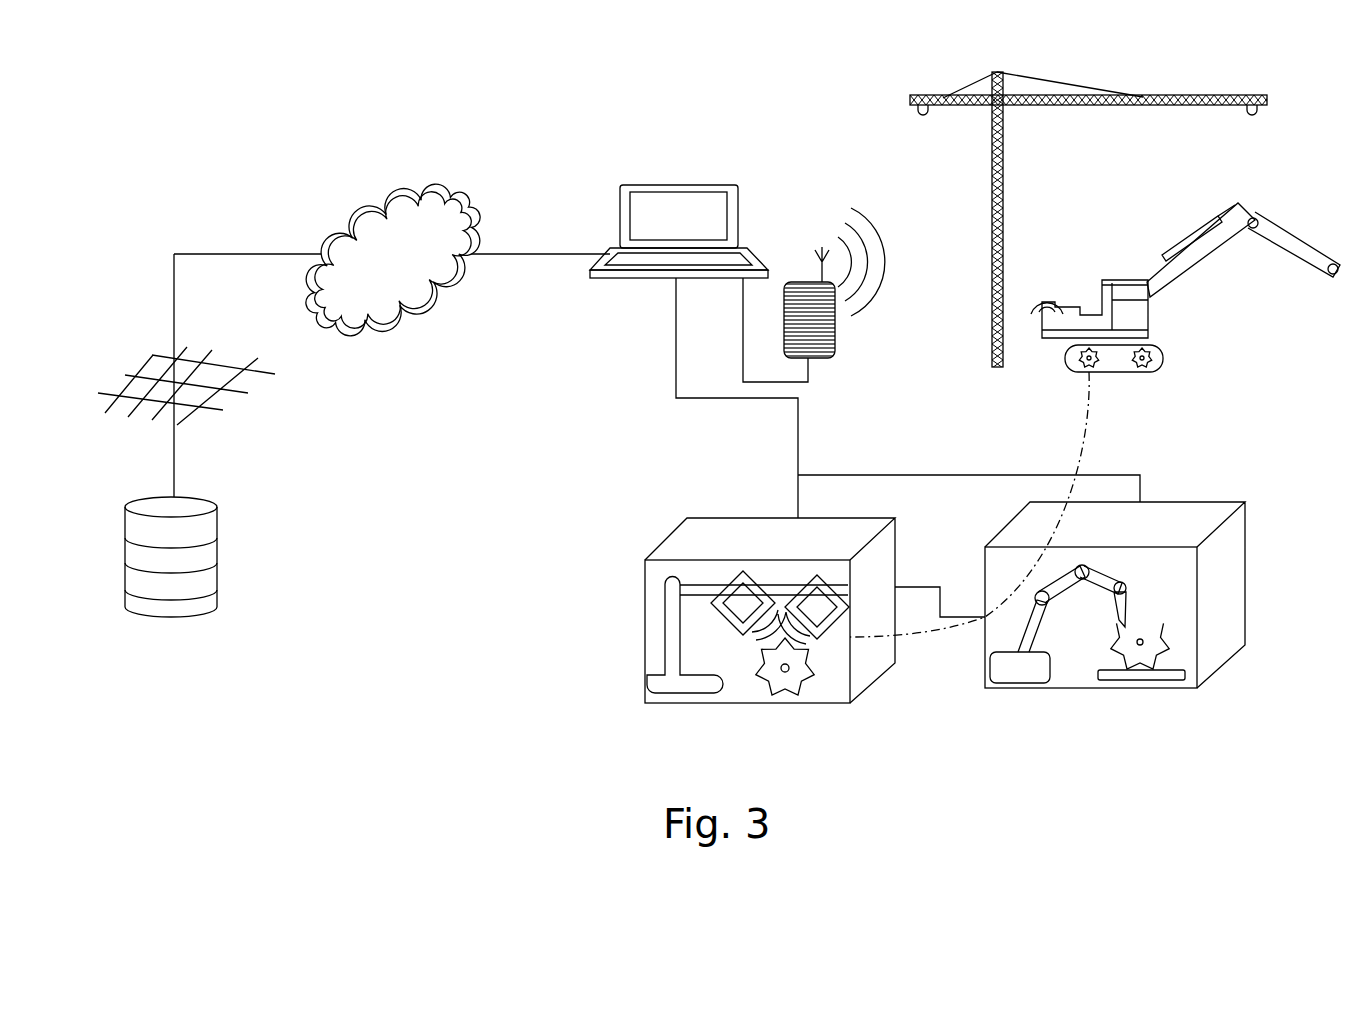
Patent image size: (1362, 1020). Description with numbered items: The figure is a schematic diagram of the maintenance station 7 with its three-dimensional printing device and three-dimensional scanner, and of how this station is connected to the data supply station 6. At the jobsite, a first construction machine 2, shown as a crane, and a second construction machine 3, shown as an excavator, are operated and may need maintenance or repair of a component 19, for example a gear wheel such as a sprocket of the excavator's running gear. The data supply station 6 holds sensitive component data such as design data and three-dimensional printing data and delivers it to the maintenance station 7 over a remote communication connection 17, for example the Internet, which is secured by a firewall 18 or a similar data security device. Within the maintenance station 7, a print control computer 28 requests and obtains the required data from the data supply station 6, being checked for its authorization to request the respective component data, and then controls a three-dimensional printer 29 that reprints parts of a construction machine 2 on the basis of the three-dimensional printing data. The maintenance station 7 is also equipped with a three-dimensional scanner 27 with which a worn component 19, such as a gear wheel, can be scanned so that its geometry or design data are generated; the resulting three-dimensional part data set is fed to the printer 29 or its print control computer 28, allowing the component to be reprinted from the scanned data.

The first construction machine 2 is at (1016, 207).
The second construction machine 3 is at (1184, 319).
The data supply station 6 is at (226, 609).
The maintenance station 7 is at (727, 626).
The communication connection 17 is at (522, 252).
The firewall 18 is at (147, 368).
The component 19 is at (1072, 363).
The 3D scanner 27 is at (668, 612).
The print control computer 28 is at (660, 273).
The 3D printer 29 is at (1105, 577).